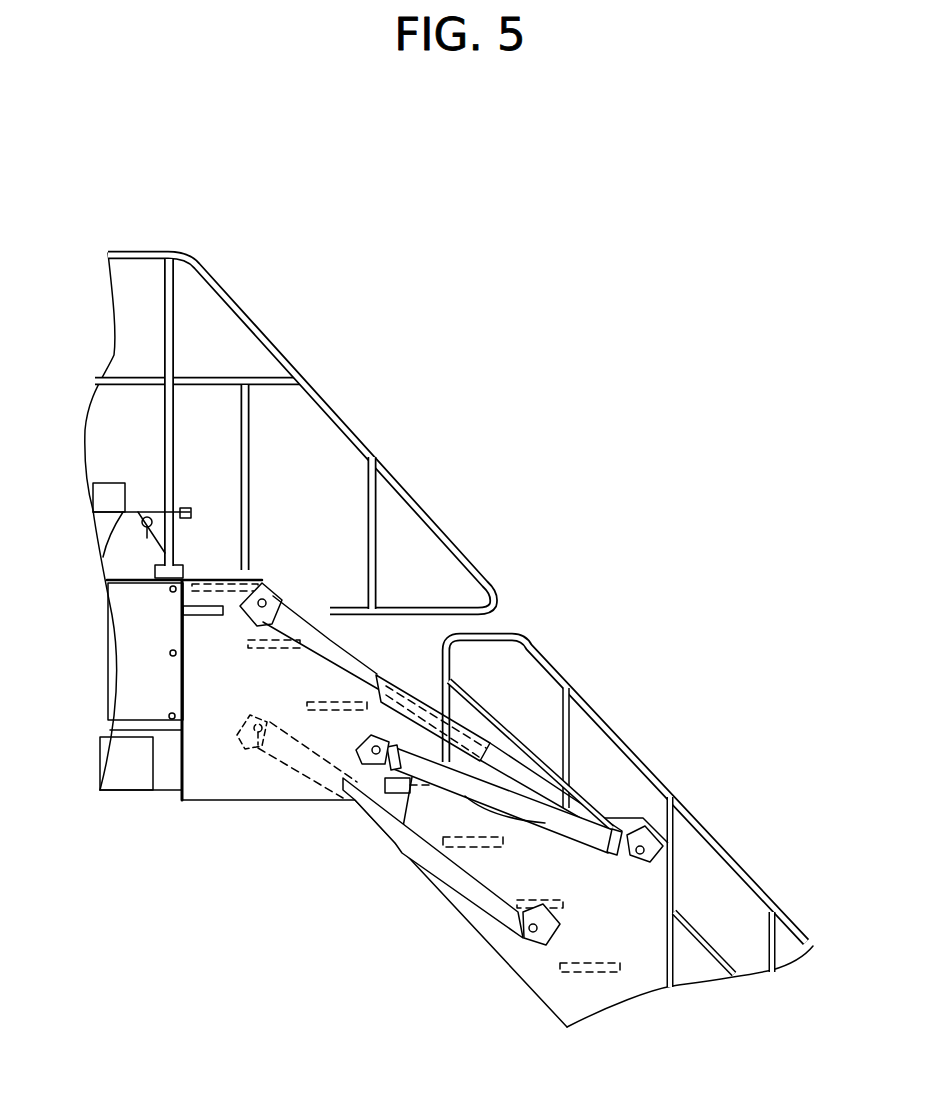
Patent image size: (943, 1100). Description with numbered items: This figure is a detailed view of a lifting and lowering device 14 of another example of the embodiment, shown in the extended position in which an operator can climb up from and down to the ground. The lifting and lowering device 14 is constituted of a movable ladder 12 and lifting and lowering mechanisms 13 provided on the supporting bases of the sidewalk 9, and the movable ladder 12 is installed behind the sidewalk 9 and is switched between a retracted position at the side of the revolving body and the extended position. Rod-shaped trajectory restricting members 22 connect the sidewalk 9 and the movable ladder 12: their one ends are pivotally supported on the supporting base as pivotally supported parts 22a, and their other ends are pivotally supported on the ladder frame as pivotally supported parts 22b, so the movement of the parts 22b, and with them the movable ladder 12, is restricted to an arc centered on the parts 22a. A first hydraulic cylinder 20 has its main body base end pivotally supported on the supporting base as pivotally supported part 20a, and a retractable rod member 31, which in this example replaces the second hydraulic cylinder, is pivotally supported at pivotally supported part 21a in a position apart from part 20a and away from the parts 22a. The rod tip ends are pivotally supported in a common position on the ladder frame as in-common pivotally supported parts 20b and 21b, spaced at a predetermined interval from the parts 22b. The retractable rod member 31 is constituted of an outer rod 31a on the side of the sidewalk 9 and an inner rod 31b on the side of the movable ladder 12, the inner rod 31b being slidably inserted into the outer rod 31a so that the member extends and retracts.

The sidewalk 9 is at (130, 568).
The movable ladder 12 is at (657, 885).
The lifting and lowering mechanism 13 is at (586, 751).
The lifting and lowering device 14 is at (765, 715).
The first hydraulic cylinder 20 is at (457, 784).
The pivotally supported part (main body base end of first hydraulic cylinder) 20a is at (355, 760).
The in-common pivotally supported part (rod tip end of first hydraulic cylinder) 20b is at (640, 856).
The pivotally supported part (main body base end) 21a is at (267, 597).
The in-common pivotally supported part (rod tip end) 21b is at (559, 942).
The trajectory restricting member 22 is at (450, 868).
The pivotally supported part (one end of trajectory restricting member) 22a is at (256, 740).
The pivotally supported part (other end of trajectory restricting member) 22b is at (529, 931).
The retractable rod member 31 is at (587, 543).
The outer rod 31a is at (372, 668).
The inner rod 31b is at (490, 743).